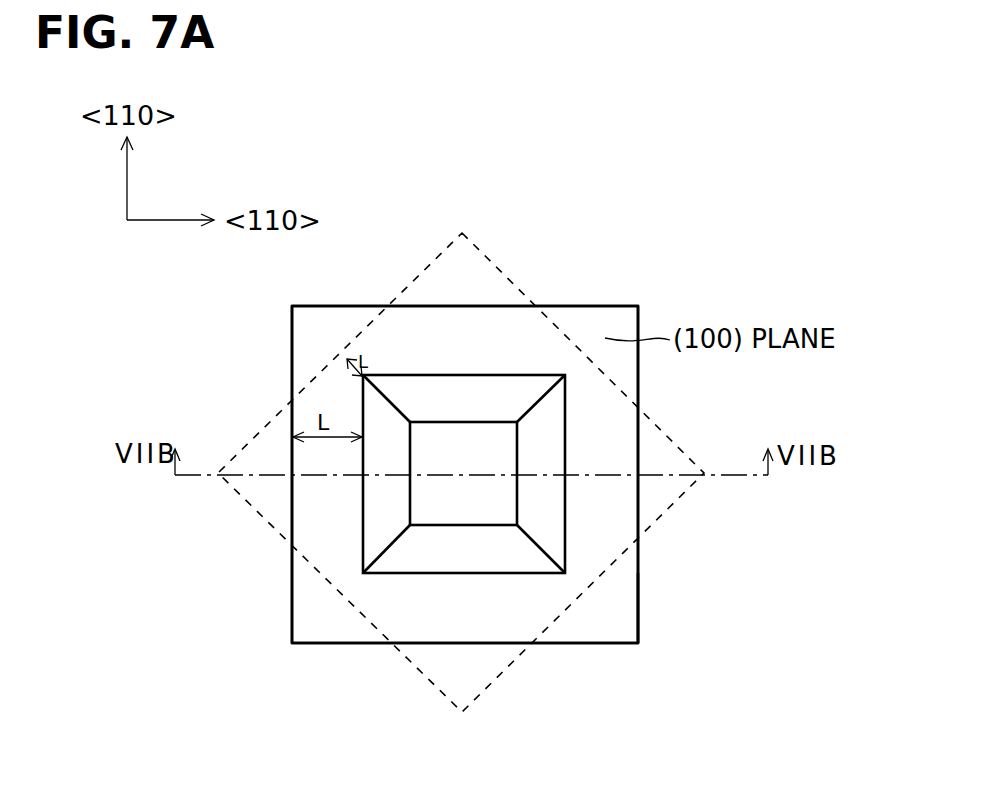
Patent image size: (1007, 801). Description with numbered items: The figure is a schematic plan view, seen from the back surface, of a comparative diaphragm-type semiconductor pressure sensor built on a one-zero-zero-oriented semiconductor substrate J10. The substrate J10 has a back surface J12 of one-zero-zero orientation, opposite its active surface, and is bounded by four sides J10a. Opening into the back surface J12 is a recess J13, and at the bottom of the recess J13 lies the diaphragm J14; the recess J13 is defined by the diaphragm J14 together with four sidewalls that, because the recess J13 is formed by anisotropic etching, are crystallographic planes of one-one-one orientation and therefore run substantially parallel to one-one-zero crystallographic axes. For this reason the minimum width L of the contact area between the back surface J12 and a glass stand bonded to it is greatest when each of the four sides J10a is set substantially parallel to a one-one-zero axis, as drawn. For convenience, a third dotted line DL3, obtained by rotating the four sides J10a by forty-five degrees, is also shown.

The (100) semiconductor substrate J10 is at (646, 377).
The four sides J10a is at (608, 306).
The back surface J12 is at (618, 622).
The recess J13 is at (490, 393).
The diaphragm J14 is at (426, 440).
The third dotted line DL3 is at (490, 252).